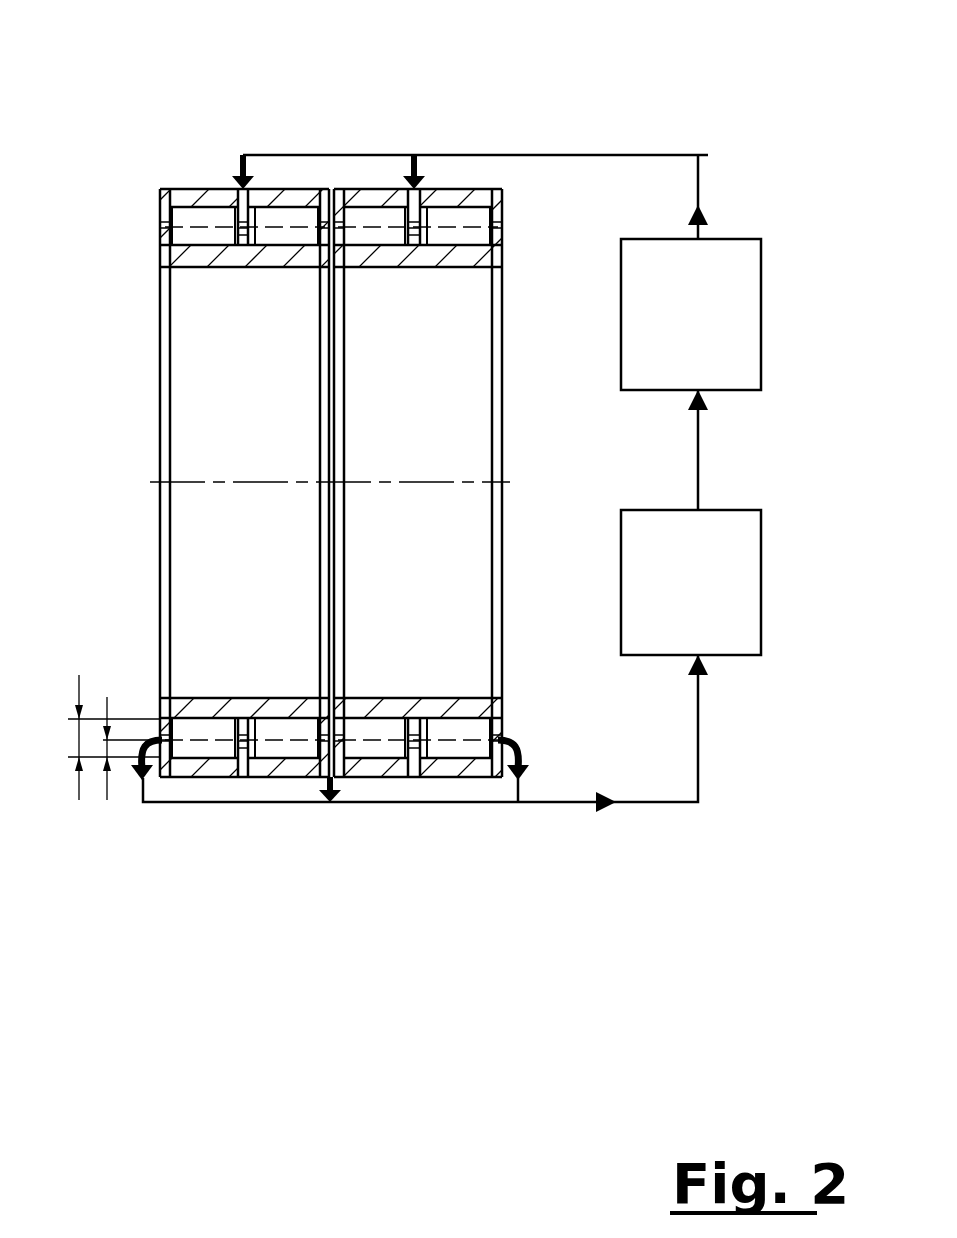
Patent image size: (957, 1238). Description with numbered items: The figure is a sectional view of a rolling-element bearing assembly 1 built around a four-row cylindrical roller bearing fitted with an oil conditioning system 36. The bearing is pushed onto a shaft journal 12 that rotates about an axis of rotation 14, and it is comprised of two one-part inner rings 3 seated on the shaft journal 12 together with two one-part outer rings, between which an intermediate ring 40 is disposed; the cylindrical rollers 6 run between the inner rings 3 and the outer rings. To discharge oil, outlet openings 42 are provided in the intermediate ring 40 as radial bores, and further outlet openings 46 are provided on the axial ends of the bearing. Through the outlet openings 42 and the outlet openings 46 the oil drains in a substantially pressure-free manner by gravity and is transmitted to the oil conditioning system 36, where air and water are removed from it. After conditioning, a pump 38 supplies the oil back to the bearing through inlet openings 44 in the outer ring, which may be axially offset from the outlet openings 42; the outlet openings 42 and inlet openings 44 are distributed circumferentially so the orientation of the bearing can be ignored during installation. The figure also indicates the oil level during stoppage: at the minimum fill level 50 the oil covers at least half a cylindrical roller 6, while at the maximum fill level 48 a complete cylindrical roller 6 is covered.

The rolling-element bearing assembly 1 is at (765, 152).
The inner ring 3 is at (220, 255).
The cylindrical roller 6 is at (182, 212).
The shaft journal 12 is at (380, 412).
The axis of rotation 14 is at (237, 478).
The oil conditioning system 36 is at (761, 563).
The pump 38 is at (761, 327).
The intermediate ring 40 is at (368, 770).
The outlet openings 42 is at (314, 796).
The inlet openings 44 is at (250, 192).
The outlet openings 46 is at (160, 740).
The maximum fill level 48 is at (100, 740).
The minimum fill level 50 is at (93, 760).